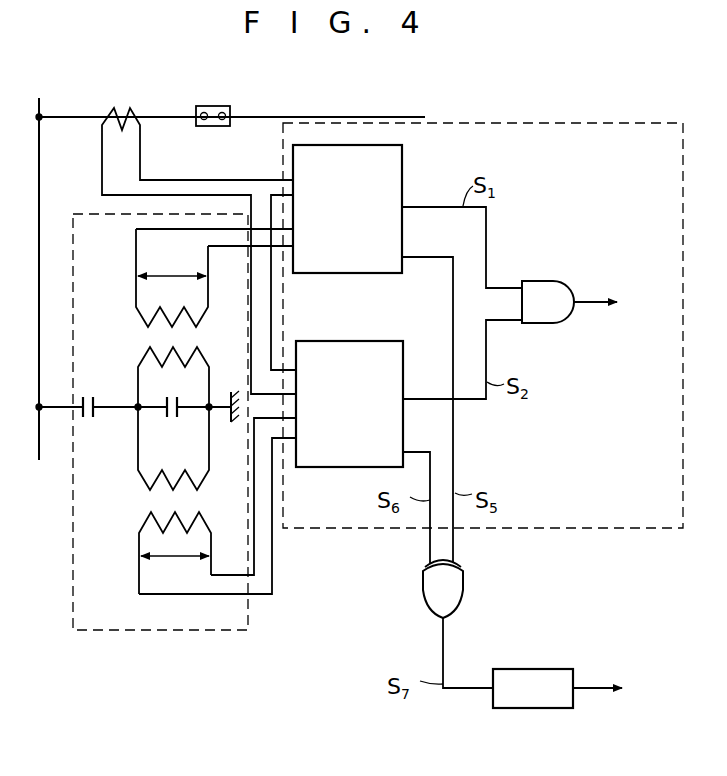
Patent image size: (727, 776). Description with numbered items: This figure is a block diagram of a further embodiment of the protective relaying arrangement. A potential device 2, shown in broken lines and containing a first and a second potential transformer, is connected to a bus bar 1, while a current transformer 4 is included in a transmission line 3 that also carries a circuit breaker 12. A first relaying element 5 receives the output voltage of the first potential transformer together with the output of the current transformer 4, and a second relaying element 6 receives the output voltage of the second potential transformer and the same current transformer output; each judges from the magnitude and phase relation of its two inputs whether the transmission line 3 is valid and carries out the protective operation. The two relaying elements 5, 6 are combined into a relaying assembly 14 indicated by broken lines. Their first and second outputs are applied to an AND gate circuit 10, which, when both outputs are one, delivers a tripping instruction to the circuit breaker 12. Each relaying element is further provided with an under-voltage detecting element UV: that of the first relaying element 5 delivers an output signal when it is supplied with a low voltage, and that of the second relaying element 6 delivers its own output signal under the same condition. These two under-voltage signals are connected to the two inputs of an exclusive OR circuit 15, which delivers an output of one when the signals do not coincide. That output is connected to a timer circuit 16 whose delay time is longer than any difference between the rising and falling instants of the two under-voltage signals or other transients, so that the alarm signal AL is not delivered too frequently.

The bus bar 1 is at (40, 310).
The potential device 2 is at (170, 631).
The transmission line 3 is at (327, 116).
The current transformer 4 is at (128, 107).
The first relaying element 5 is at (402, 163).
The second relaying element 6 is at (403, 360).
The AND gate circuit 10 is at (551, 281).
The circuit breaker 12 is at (212, 105).
The relaying assembly 14 is at (600, 122).
The exclusive OR circuit 15 is at (423, 586).
The timer circuit 16 is at (521, 668).